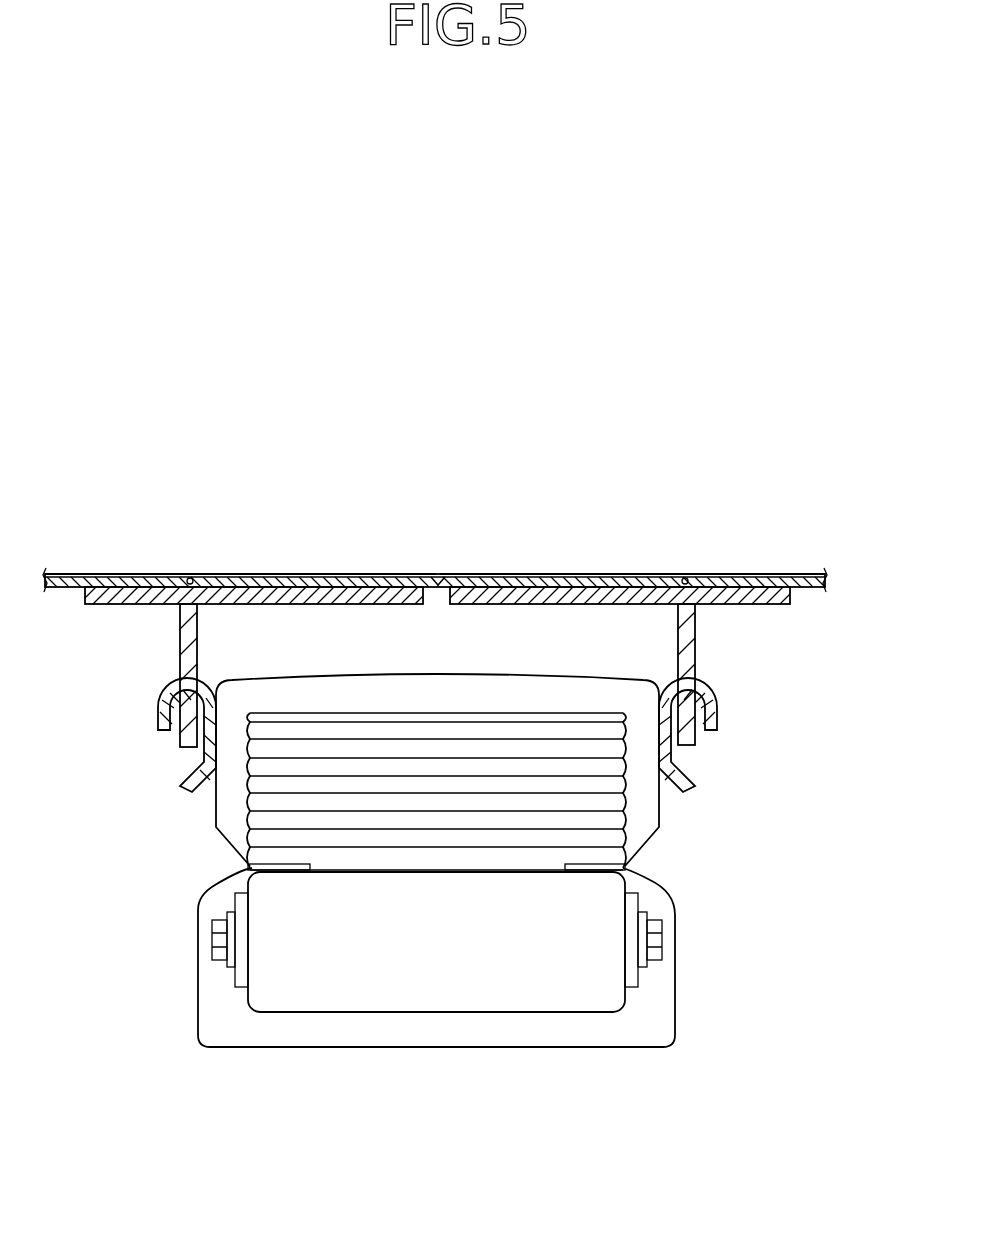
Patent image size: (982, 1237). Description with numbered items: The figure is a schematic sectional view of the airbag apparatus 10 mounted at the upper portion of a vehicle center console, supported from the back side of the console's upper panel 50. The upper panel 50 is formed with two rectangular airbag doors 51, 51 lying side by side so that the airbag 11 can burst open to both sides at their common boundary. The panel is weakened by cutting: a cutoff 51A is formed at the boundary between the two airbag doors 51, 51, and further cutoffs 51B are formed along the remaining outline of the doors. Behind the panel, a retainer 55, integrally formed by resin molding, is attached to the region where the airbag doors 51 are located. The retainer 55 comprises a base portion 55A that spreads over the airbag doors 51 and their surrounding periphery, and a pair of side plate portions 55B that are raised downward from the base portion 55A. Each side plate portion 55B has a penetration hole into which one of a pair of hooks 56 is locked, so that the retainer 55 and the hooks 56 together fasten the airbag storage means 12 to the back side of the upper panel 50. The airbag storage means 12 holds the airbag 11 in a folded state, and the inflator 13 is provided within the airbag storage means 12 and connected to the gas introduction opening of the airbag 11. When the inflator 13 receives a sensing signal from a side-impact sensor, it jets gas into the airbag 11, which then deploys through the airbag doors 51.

The airbag apparatus 10 is at (457, 877).
The airbag 11 is at (441, 772).
The airbag storage means 12 is at (680, 925).
The inflator 13 is at (632, 1003).
The upper panel 50 is at (785, 553).
The airbag door 51 is at (300, 572).
The cutoff 51A is at (438, 575).
The cutoff 51B is at (190, 578).
The retainer 55 is at (441, 667).
The base portion 55A is at (370, 604).
The side plate portion 55B is at (197, 647).
The hook 56 is at (158, 718).